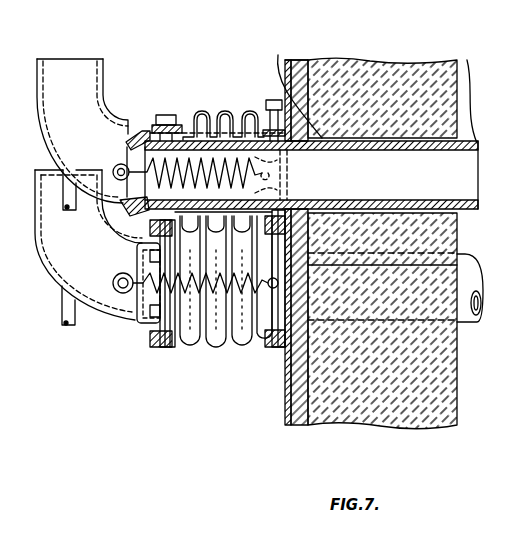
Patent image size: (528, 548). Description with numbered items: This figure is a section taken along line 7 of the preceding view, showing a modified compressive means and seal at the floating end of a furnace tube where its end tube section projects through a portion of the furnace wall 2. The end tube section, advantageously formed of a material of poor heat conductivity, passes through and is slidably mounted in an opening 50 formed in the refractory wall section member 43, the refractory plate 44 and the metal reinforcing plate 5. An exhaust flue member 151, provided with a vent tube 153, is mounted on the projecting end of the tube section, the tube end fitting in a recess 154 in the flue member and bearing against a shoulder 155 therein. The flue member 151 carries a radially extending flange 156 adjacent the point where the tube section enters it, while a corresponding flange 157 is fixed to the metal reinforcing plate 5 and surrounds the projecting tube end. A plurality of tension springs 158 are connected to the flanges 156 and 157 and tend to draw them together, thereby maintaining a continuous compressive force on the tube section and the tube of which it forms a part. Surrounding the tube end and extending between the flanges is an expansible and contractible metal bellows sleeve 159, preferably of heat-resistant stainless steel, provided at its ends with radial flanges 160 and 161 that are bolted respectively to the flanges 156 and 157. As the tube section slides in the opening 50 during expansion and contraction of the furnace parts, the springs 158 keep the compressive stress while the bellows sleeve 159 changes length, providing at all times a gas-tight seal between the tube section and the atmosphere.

The wall 2 is at (338, 60).
The metal reinforcing plate 5 is at (286, 416).
The section line 7— 7 is at (0, 297).
The refractory wall section member 43 is at (412, 63).
The refractory plate 44 is at (298, 425).
The opening 50 is at (292, 87).
The exhaust flue member 151 is at (107, 70).
The vent tube 153 is at (67, 192).
The recess 154 is at (142, 131).
The shoulder 155 is at (135, 214).
The radially extending flange 156 is at (166, 113).
The flange 157 is at (283, 100).
The tension springs 158 is at (235, 158).
The bellows sleeve 159 is at (197, 112).
The radial flange 160 is at (180, 348).
The radial flange 161 is at (280, 350).